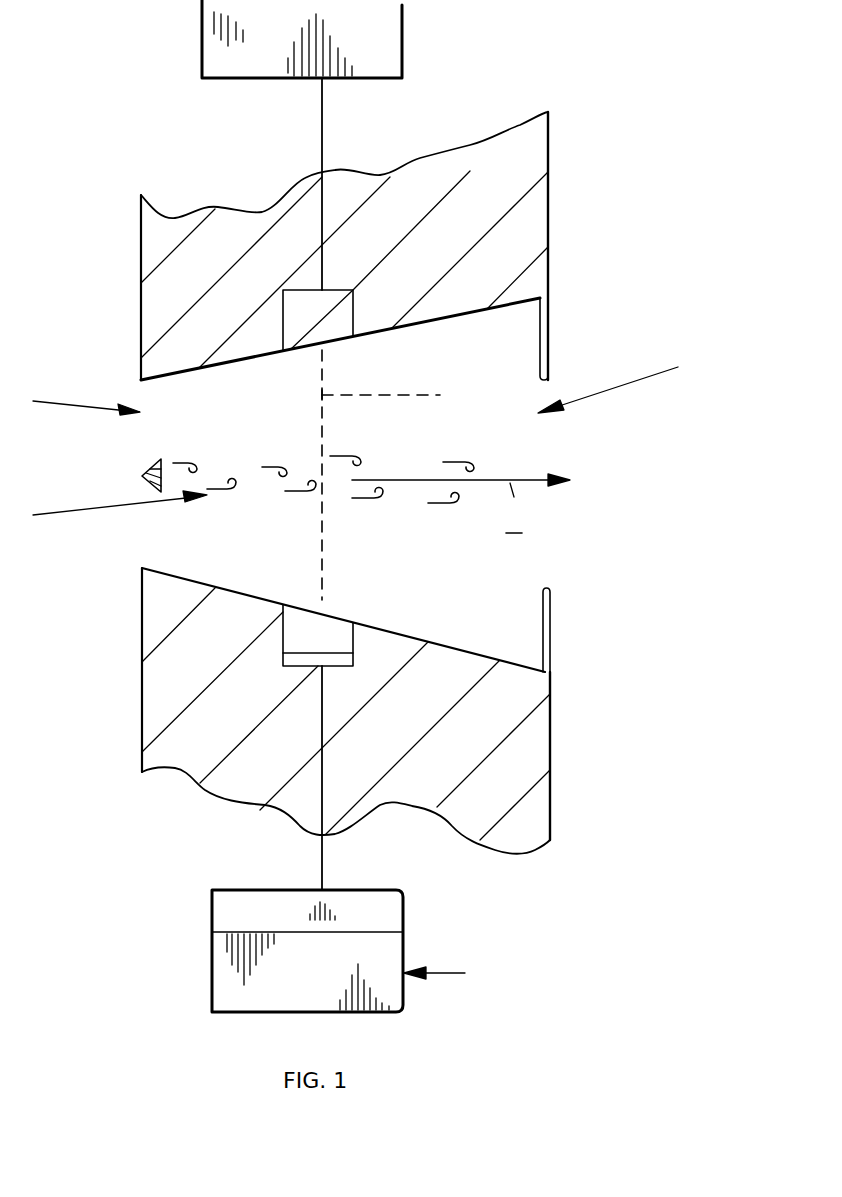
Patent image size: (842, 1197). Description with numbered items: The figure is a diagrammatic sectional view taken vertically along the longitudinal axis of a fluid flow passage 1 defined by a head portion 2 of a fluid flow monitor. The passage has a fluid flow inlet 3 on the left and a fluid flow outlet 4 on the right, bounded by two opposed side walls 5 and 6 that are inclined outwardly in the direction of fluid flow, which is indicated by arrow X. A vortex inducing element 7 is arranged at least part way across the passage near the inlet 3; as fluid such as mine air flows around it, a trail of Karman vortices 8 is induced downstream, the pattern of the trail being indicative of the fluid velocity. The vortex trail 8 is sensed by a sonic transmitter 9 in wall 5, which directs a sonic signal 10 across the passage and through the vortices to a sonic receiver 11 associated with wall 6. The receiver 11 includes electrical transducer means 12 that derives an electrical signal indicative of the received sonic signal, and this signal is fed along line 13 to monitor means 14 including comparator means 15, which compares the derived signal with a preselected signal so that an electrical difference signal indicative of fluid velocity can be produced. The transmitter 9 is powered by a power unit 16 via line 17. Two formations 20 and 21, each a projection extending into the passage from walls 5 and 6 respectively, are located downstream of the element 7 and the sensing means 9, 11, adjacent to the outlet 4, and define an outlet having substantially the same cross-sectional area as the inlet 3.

The fluid flow passage 1 is at (195, 533).
The head portion 2 is at (157, 288).
The fluid flow inlet 3 is at (76, 402).
The fluid flow outlet 4 is at (618, 385).
The side wall 5 is at (258, 368).
The side wall 6 is at (210, 590).
The vortex inducing element 7 is at (145, 473).
The Karman vortices 8 is at (109, 511).
The sonic transmitter 9 is at (336, 305).
The sonic signal 10 is at (395, 475).
The sonic receiver 11 is at (335, 637).
The electrical transducer means 12 is at (325, 660).
The line 13 is at (322, 863).
The monitor means 14 is at (354, 951).
The comparator means 15 is at (388, 918).
The power unit 16 is at (404, 33).
The line 17 is at (322, 134).
The formation 20 is at (548, 338).
The formation 21 is at (550, 611).